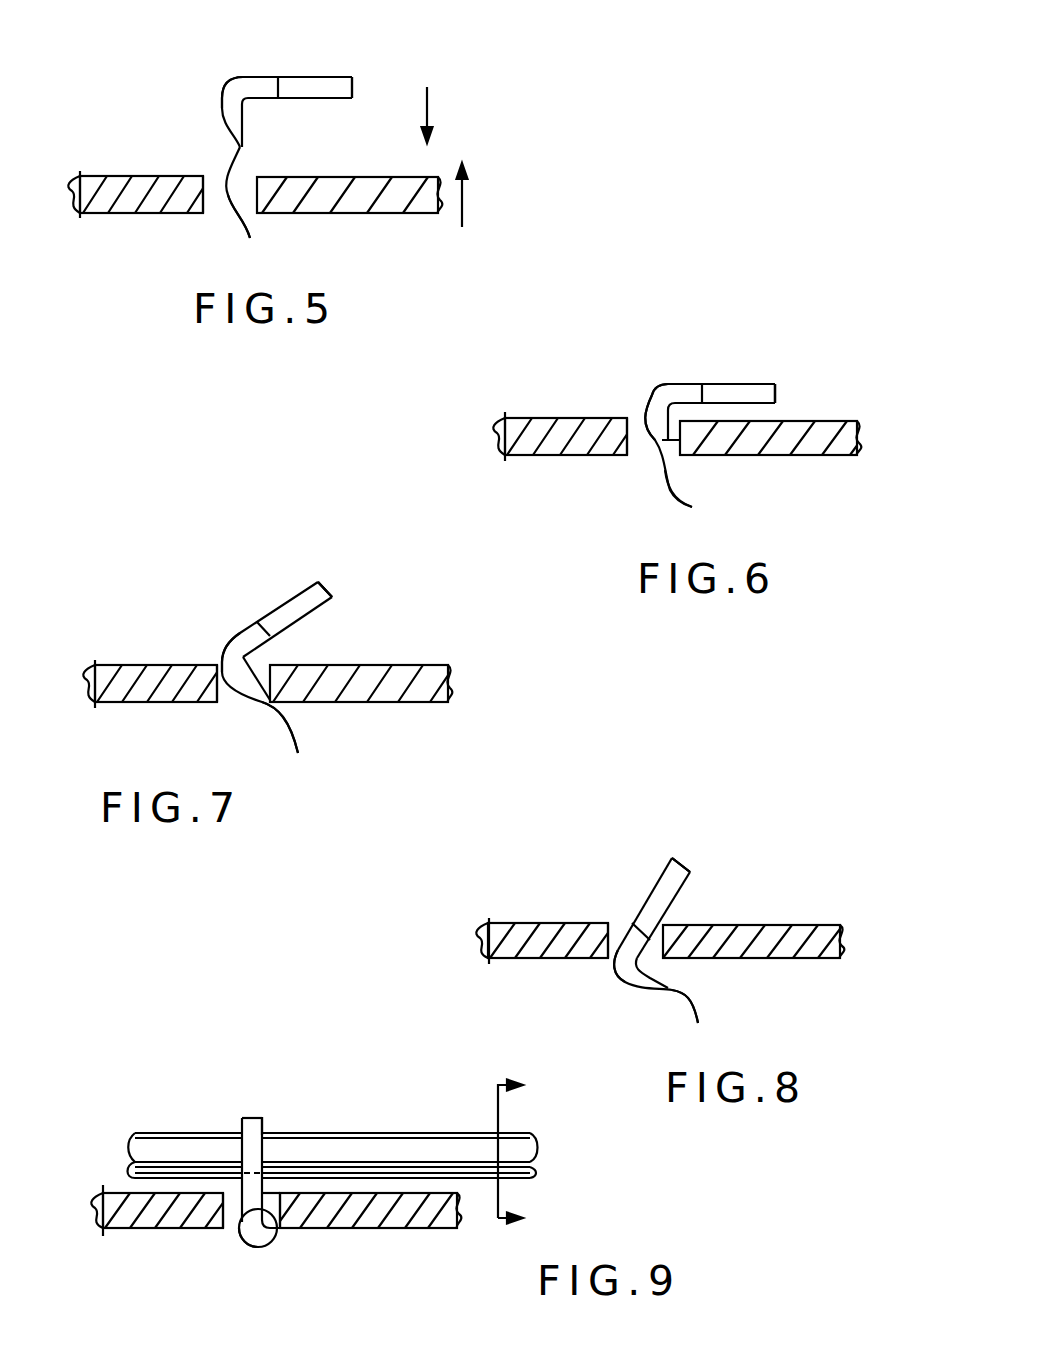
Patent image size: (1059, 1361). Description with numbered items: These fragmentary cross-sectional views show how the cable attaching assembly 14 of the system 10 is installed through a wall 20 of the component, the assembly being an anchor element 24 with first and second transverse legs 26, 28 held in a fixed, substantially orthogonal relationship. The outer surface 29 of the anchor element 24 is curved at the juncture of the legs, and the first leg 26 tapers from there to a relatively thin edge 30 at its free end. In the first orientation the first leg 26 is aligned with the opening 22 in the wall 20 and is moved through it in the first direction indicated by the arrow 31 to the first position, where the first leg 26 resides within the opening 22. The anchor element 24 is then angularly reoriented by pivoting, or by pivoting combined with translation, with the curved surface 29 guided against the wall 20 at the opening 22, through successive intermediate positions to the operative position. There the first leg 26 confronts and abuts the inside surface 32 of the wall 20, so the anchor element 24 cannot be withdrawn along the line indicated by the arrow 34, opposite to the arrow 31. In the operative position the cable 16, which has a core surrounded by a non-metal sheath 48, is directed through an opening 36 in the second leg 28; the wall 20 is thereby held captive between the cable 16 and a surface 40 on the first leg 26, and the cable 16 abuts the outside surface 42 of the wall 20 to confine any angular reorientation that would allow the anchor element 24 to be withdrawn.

In FIG. 9, the system 10 is at (536, 1155).
In FIG. 5, the cable attaching assembly 14 is at (410, 78).
In FIG. 6, the cable attaching assembly 14 is at (818, 364).
In FIG. 7, the cable attaching assembly 14 is at (372, 612).
In FIG. 8, the cable attaching assembly 14 is at (735, 864).
In FIG. 9, the cable attaching assembly 14 is at (240, 1090).
In FIG. 9, the cable 16 is at (448, 1157).
In FIG. 5, the wall 20 is at (143, 180).
In FIG. 6, the wall 20 is at (562, 433).
In FIG. 7, the wall 20 is at (357, 692).
In FIG. 8, the wall 20 is at (773, 950).
In FIG. 9, the wall 20 is at (397, 1213).
In FIG. 5, the opening 22 is at (203, 197).
In FIG. 6, the opening 22 is at (662, 440).
In FIG. 7, the opening 22 is at (222, 688).
In FIG. 8, the opening 22 is at (632, 928).
In FIG. 9, the opening 22 is at (242, 1225).
In FIG. 5, the anchor element 24 is at (320, 84).
In FIG. 6, the anchor element 24 is at (738, 395).
In FIG. 7, the anchor element 24 is at (310, 585).
In FIG. 8, the anchor element 24 is at (633, 977).
In FIG. 9, the anchor element 24 is at (255, 1127).
In FIG. 5, the first leg 26 is at (243, 128).
In FIG. 6, the first leg 26 is at (653, 415).
In FIG. 7, the first leg 26 is at (258, 693).
In FIG. 8, the first leg 26 is at (650, 992).
In FIG. 9, the first leg 26 is at (285, 1243).
In FIG. 5, the second leg 28 is at (327, 100).
In FIG. 6, the second leg 28 is at (762, 398).
In FIG. 7, the second leg 28 is at (297, 610).
In FIG. 8, the second leg 28 is at (670, 877).
In FIG. 9, the second leg 28 is at (268, 1128).
In FIG. 5, the outer surface 29 is at (222, 91).
In FIG. 6, the outer surface 29 is at (650, 393).
In FIG. 7, the outer surface 29 is at (218, 653).
In FIG. 8, the outer surface 29 is at (613, 975).
In FIG. 9, the outer surface 29 is at (247, 1245).
In FIG. 5, the edge 30 is at (252, 232).
In FIG. 6, the edge 30 is at (694, 502).
In FIG. 7, the edge 30 is at (290, 751).
In FIG. 8, the edge 30 is at (692, 1023).
In FIG. 9, the edge 30 is at (328, 1230).
In FIG. 5, the arrow 31 is at (428, 102).
In FIG. 5, the inside surface 32 is at (350, 213).
In FIG. 6, the inside surface 32 is at (817, 455).
In FIG. 7, the inside surface 32 is at (313, 703).
In FIG. 8, the inside surface 32 is at (730, 958).
In FIG. 9, the inside surface 32 is at (360, 1229).
In FIG. 5, the arrow 34 is at (463, 202).
In FIG. 9, the opening 36 is at (233, 1160).
In FIG. 9, the surface 40 is at (291, 1242).
In FIG. 5, the outside surface 42 is at (147, 192).
In FIG. 6, the outside surface 42 is at (818, 430).
In FIG. 7, the outside surface 42 is at (153, 687).
In FIG. 8, the outside surface 42 is at (550, 923).
In FIG. 9, the outside surface 42 is at (373, 1205).
In FIG. 9, the sheath 48 is at (478, 1155).